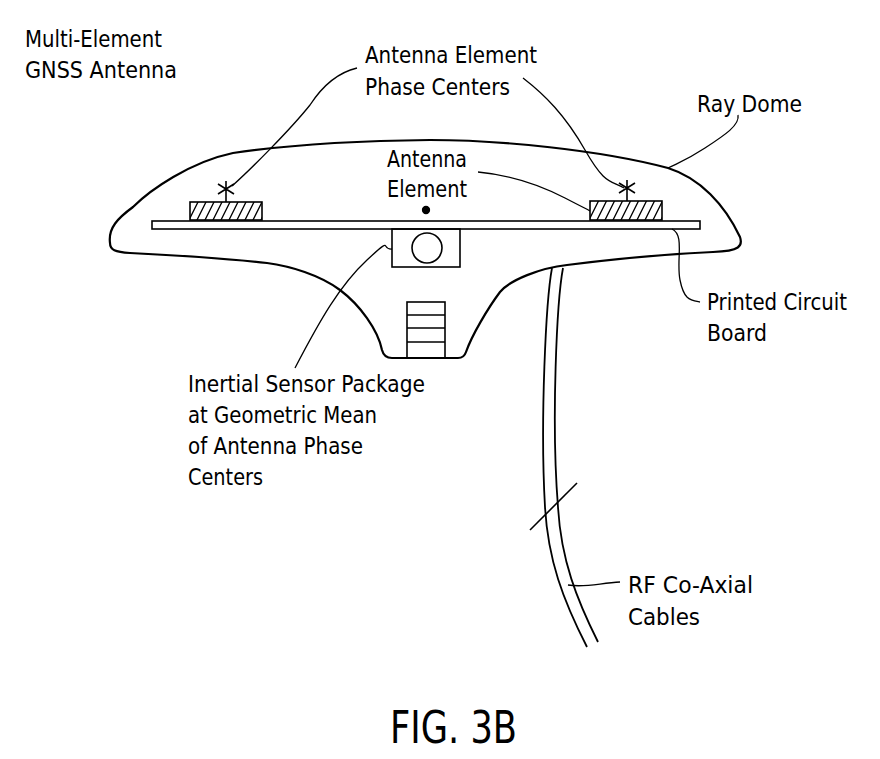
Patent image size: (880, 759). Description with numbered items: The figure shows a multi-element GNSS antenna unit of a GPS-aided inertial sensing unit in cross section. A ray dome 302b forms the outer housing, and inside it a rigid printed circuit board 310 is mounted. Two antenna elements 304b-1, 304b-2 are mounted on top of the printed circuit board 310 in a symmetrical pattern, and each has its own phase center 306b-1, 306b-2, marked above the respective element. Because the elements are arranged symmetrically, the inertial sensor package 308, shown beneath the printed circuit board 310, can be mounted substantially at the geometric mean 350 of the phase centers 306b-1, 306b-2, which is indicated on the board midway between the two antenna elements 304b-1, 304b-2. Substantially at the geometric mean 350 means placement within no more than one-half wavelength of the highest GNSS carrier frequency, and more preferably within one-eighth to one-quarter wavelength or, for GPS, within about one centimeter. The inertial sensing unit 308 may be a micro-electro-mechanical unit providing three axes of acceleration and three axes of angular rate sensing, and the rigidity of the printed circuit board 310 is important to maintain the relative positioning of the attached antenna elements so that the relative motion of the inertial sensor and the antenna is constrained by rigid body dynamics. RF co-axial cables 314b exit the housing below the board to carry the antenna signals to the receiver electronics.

The ray dome 302b is at (740, 231).
The antenna element 304b-1 is at (663, 208).
The antenna element 304b-2 is at (190, 211).
The phase center 306b-1 is at (627, 187).
The phase center 306b-2 is at (226, 186).
The inertial sensing unit 308 is at (438, 267).
The printed circuit board 310 is at (487, 230).
The RF co-axial cables 314b is at (558, 405).
The geometric mean 350 is at (433, 210).